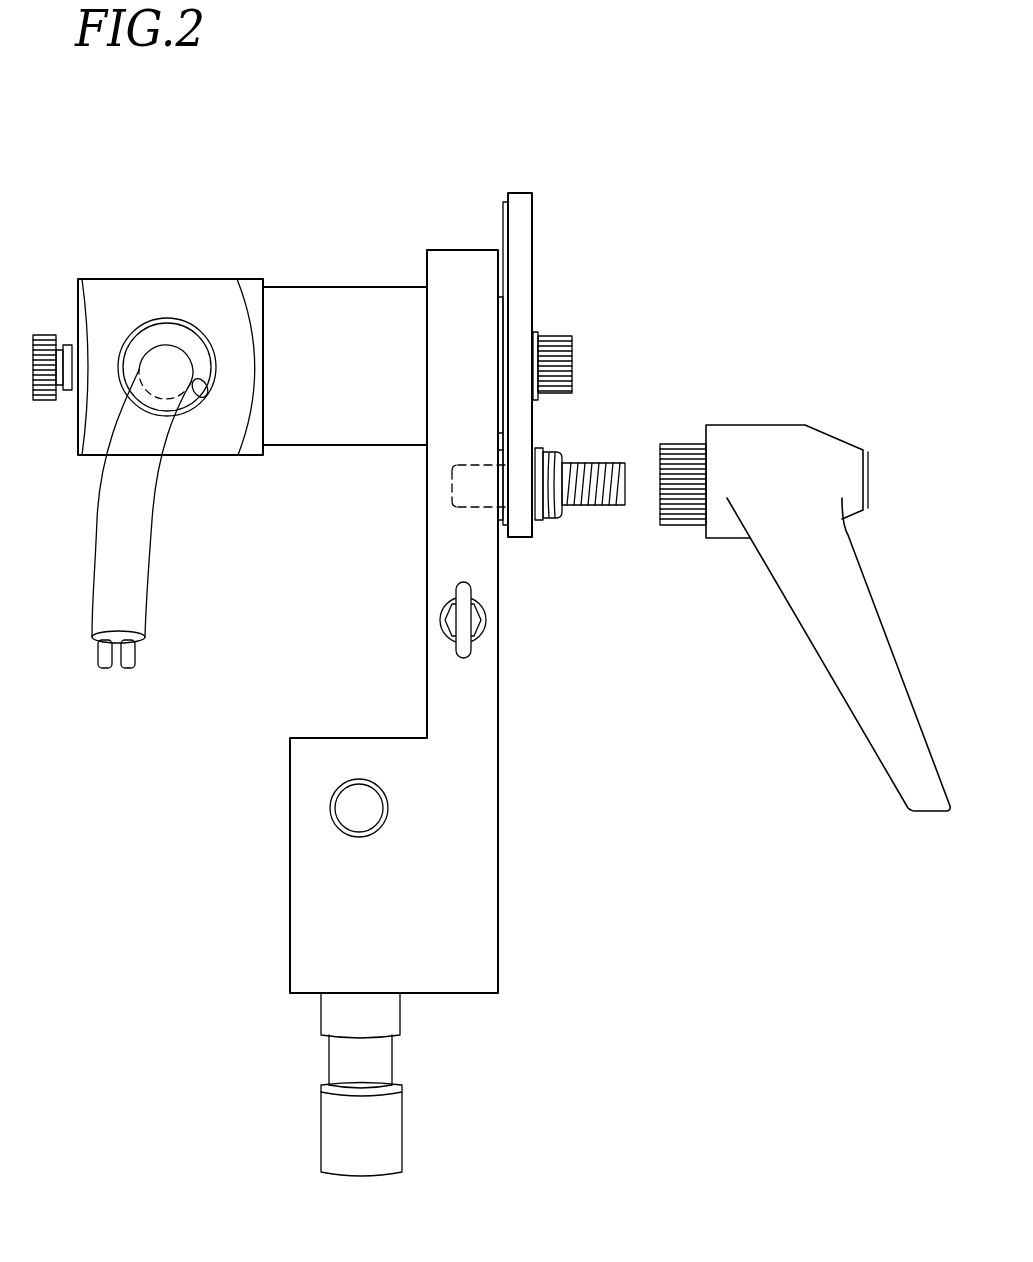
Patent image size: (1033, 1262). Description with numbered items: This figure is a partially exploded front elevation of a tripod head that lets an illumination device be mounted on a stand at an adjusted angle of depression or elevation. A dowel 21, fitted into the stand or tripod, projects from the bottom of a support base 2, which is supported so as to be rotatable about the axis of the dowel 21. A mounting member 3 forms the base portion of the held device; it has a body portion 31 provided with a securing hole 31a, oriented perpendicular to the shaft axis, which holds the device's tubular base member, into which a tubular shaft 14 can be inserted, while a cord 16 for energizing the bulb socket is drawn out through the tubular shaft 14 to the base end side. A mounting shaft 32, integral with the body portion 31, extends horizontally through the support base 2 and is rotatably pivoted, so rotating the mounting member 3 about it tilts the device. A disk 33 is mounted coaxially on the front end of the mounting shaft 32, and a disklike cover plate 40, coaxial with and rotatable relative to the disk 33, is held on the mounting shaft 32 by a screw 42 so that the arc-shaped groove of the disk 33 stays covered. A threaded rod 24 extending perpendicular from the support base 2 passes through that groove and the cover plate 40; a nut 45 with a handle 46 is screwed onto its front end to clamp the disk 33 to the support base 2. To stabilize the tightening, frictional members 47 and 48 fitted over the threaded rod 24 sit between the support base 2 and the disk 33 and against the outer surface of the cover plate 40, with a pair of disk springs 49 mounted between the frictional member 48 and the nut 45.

The support base 2 is at (542, 869).
The mounting member 3 is at (230, 338).
The tubular shaft 14 is at (165, 330).
The cord 16 is at (127, 582).
The dowel 21 is at (365, 1135).
The threaded rod 24 is at (605, 497).
The body portion 31 is at (103, 300).
The securing hole 31a is at (193, 400).
The mounting shaft 32 is at (342, 310).
The disk 33 is at (503, 226).
The cover plate 40 is at (525, 245).
The screw 42 is at (572, 345).
The nut 45 is at (678, 500).
The handle 46 is at (862, 697).
The frictional member 47 is at (503, 525).
The frictional member 48 is at (541, 520).
The disk springs 49 is at (558, 462).